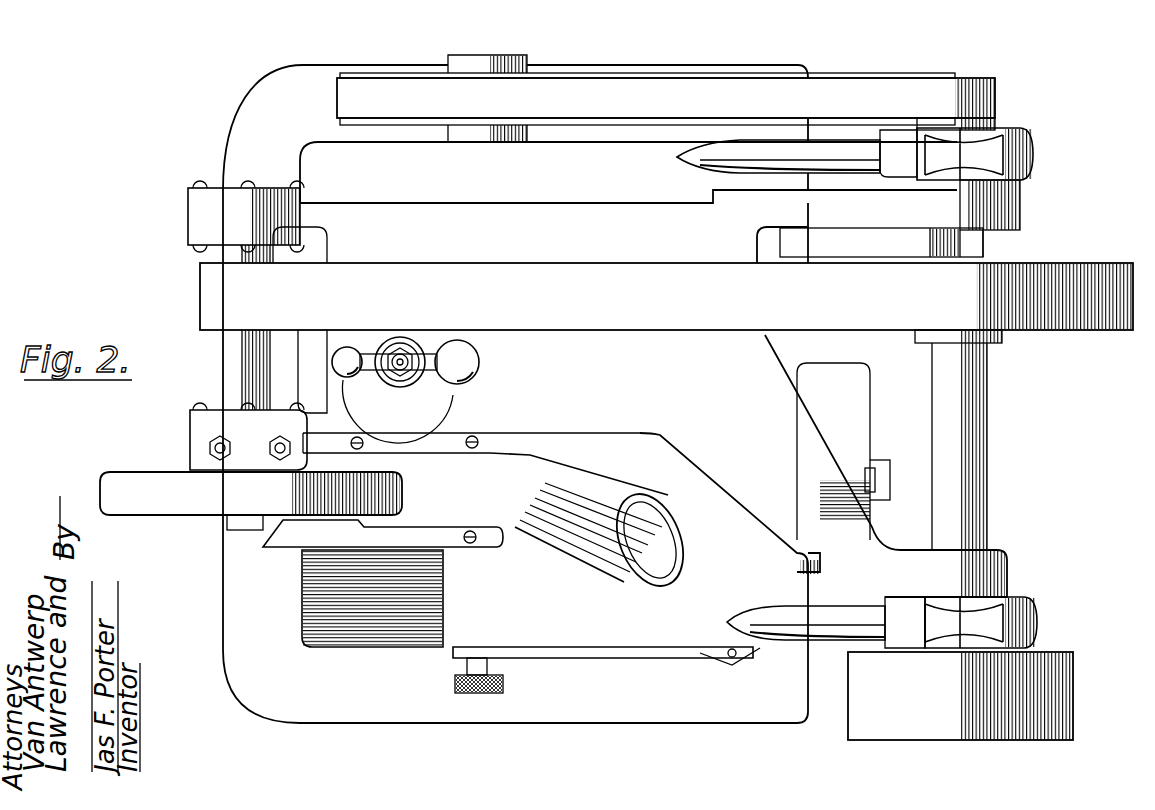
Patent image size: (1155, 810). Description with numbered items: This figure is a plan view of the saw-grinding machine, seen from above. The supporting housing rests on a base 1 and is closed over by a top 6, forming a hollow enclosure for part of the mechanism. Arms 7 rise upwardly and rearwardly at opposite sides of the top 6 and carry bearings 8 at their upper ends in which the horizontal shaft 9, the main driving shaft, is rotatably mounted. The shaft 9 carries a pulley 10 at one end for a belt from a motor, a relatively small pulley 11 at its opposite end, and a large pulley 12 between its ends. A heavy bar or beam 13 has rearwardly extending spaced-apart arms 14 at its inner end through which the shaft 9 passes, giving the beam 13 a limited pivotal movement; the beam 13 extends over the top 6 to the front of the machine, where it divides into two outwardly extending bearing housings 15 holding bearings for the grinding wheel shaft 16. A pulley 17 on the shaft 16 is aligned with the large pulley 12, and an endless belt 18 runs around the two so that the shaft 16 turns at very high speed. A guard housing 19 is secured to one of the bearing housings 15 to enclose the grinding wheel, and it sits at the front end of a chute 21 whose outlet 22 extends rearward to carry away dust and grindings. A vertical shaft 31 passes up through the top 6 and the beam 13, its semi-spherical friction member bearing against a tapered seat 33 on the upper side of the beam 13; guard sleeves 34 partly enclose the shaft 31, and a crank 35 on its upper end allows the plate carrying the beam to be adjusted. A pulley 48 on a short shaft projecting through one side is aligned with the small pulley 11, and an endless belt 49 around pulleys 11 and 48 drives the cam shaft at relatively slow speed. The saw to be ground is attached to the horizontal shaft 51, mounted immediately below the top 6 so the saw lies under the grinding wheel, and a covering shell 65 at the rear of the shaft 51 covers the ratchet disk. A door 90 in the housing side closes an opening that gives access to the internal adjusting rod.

The base 1 is at (527, 705).
The top 6 is at (583, 635).
The arms 7 is at (846, 146).
The bearings 8 is at (1000, 128).
The horizontal shaft 9 is at (978, 393).
The pulley 10 is at (932, 730).
The small pulley 11 is at (945, 72).
The large pulley 12 is at (1020, 325).
The bar or beam 13 is at (604, 425).
The arms 14 is at (920, 218).
The bearing housings 15 is at (230, 200).
The shaft 16 is at (238, 372).
The pulley 17 is at (273, 335).
The endless belt 18 is at (636, 320).
The guard housing 19 is at (197, 508).
The chute 21 is at (440, 520).
The outlet 22 is at (595, 572).
The vertical shaft 31 is at (395, 380).
The tapered seat 33 is at (455, 390).
The guard sleeves 34 is at (400, 345).
The crank 35 is at (405, 383).
The pulley 48 is at (380, 78).
The endless belt 49 is at (700, 85).
The horizontal shaft 51 is at (888, 478).
The covering shell 65 is at (858, 413).
The door 90 is at (530, 650).